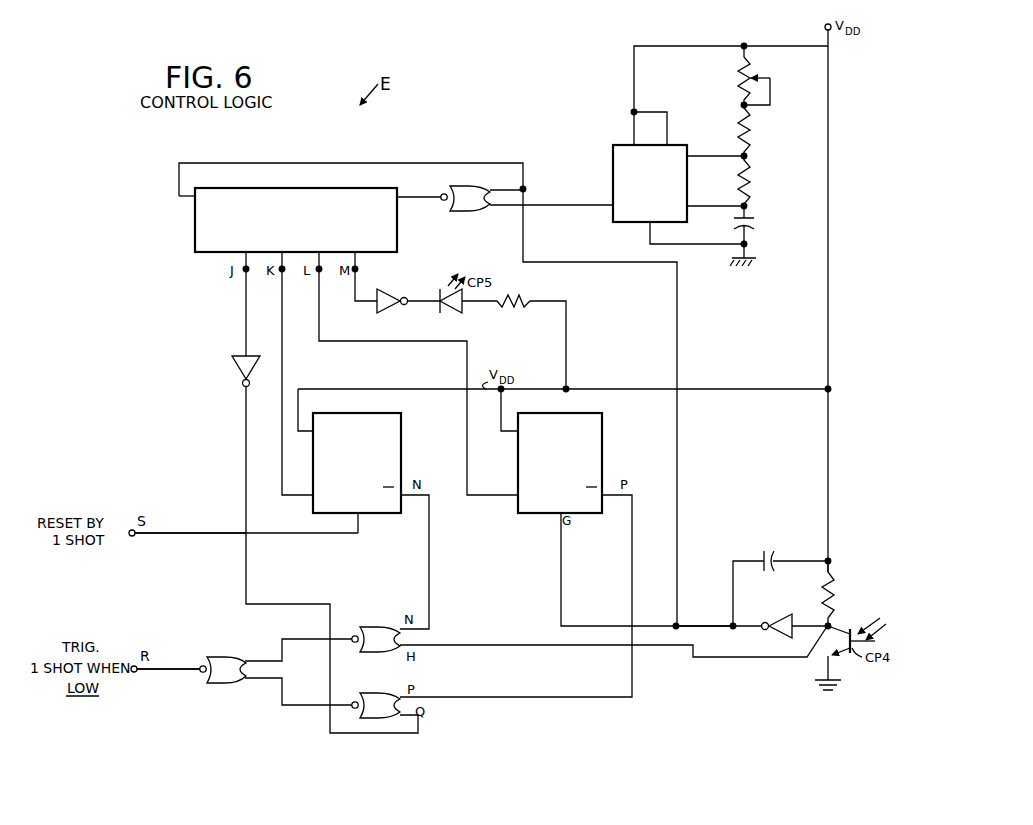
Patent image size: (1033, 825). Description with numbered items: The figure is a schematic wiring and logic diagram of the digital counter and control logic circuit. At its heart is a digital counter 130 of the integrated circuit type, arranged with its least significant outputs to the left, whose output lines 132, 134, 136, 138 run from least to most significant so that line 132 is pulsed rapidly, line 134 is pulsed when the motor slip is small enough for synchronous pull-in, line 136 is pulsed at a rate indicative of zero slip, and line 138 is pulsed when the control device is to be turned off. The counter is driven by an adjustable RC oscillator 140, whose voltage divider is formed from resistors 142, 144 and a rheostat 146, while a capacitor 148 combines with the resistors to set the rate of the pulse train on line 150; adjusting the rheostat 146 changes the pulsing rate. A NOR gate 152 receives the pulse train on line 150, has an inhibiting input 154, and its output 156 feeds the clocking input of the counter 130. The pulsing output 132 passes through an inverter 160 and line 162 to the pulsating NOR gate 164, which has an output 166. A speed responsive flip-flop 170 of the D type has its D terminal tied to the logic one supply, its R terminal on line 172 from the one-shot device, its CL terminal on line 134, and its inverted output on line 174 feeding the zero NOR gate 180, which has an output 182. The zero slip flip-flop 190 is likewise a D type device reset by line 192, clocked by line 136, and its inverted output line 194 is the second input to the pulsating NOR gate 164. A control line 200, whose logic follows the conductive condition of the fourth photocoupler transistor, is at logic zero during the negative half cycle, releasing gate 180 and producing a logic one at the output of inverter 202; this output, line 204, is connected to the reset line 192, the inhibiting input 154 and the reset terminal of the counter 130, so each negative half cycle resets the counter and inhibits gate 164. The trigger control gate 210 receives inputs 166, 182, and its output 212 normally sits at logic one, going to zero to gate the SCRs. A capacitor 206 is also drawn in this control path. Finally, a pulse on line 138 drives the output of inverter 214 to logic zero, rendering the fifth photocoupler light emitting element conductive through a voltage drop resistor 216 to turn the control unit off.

The digital counter 130 is at (333, 196).
The output line 132 is at (243, 300).
The output line 134 is at (280, 298).
The output line 136 is at (318, 307).
The output line 138 is at (355, 308).
The adjustable RC oscillator 140 is at (612, 153).
The resistor 142 is at (748, 183).
The resistor 144 is at (740, 127).
The rheostat 146 is at (740, 78).
The capacitor 148 is at (756, 226).
The line 150 is at (565, 204).
The NOR gate 152 is at (465, 188).
The inhibiting input 154 is at (498, 187).
The output 156 is at (415, 199).
The inverter 160 is at (236, 366).
The line 162 is at (244, 423).
The pulsating NOR gate 164 is at (374, 701).
The output 166 is at (312, 706).
The speed responsive flip-flop 170 is at (380, 418).
The line 172 is at (197, 532).
The line 174 is at (431, 541).
The zero NOR gate 180 is at (374, 626).
The output 182 is at (306, 636).
The zero slip flip-flop 190 is at (590, 418).
The reset line 192 is at (560, 576).
The line 194 is at (631, 562).
The control line 200 is at (542, 646).
The inverter 202 is at (776, 634).
The line 204 is at (699, 625).
The capacitor 206 is at (775, 553).
The trigger control gate 210 is at (224, 665).
The output 212 is at (173, 672).
The inverter 214 is at (390, 296).
The voltage drop resistor 216 is at (512, 304).